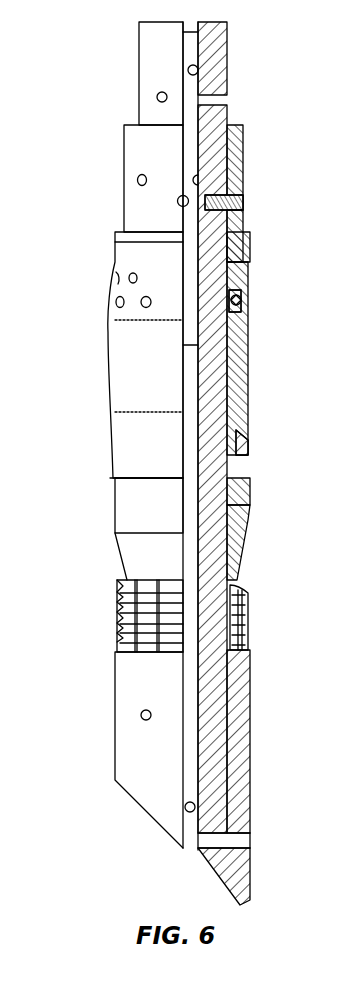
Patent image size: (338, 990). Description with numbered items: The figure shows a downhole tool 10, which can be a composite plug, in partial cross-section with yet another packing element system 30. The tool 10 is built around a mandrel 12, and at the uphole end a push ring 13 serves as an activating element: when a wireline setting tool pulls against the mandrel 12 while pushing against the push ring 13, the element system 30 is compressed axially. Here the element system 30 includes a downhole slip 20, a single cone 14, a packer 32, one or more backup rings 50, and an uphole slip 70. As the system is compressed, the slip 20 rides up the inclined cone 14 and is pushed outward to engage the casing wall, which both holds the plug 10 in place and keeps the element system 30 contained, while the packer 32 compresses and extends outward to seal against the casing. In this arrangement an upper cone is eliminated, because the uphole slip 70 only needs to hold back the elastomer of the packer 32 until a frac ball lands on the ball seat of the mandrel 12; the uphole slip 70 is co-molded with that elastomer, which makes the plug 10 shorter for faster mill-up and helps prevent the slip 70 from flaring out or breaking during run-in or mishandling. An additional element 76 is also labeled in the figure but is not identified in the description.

The downhole tool 10 is at (51, 98).
The mandrel 12 is at (139, 103).
The push ring 13 is at (115, 245).
The element system 30 is at (90, 390).
The slip 20 is at (117, 600).
The uphole slip 70 is at (245, 290).
The packer 32 is at (249, 375).
The backup ring 50 is at (247, 453).
The cone 14 is at (247, 553).
The port 76 is at (328, 619).